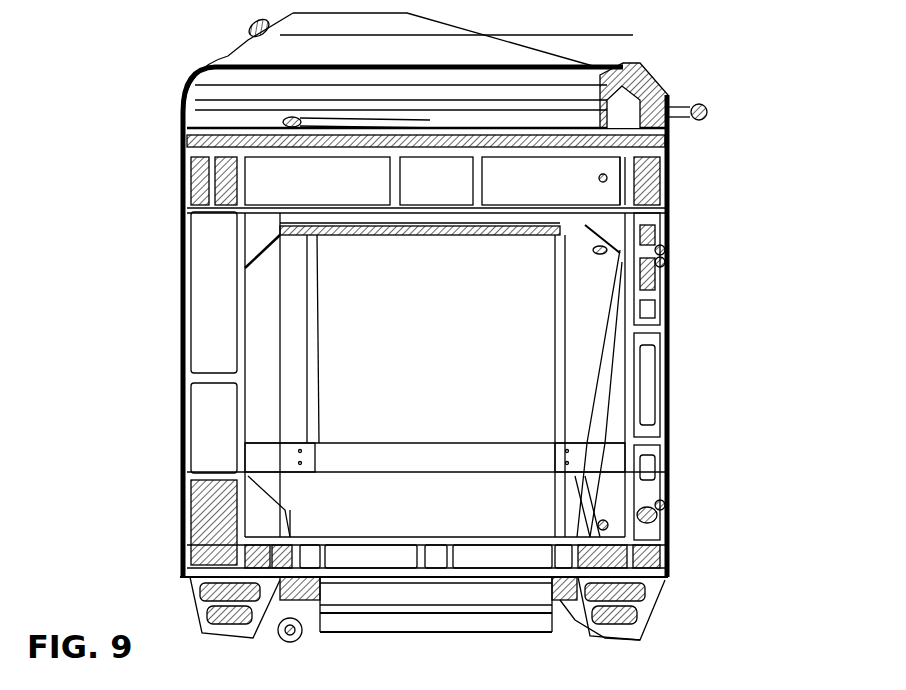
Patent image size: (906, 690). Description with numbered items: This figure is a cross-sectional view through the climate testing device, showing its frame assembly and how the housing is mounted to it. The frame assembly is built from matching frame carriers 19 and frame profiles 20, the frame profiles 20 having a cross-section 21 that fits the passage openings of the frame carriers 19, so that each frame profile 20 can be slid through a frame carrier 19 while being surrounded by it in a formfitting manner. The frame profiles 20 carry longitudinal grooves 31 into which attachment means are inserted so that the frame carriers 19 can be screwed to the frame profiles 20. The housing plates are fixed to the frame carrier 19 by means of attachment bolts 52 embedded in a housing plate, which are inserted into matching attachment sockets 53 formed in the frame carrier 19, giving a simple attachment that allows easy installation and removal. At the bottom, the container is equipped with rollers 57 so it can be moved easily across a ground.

The frame carrier 19 is at (180, 378).
The frame profile 20 is at (180, 160).
The cross-section 21 is at (668, 186).
The longitudinal groove 31 is at (672, 160).
The attachment bolt 52 is at (670, 250).
The attachment socket 53 is at (668, 262).
The roller 57 is at (302, 628).